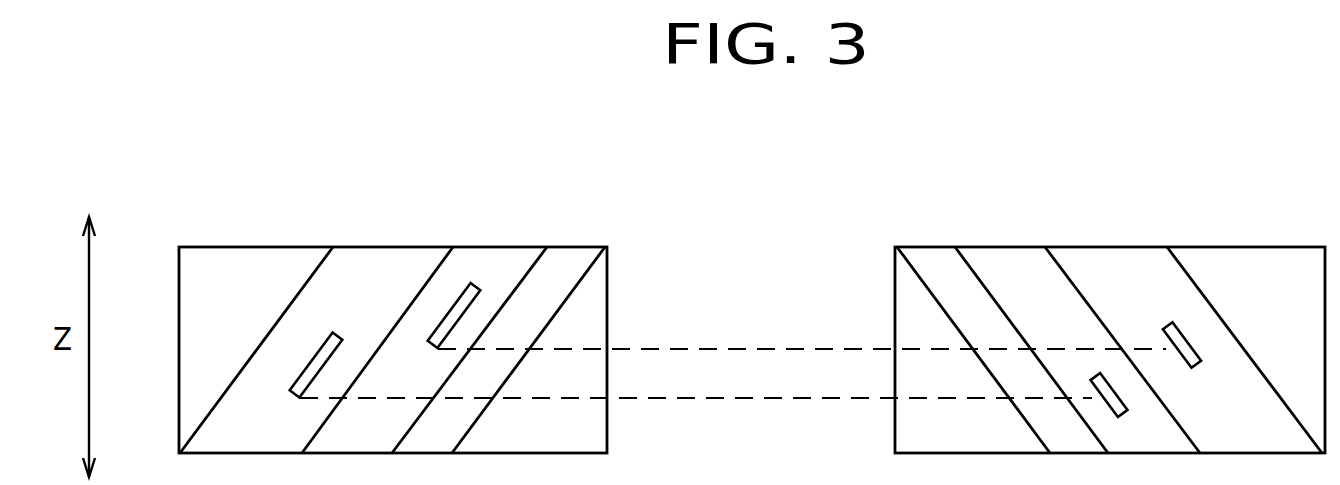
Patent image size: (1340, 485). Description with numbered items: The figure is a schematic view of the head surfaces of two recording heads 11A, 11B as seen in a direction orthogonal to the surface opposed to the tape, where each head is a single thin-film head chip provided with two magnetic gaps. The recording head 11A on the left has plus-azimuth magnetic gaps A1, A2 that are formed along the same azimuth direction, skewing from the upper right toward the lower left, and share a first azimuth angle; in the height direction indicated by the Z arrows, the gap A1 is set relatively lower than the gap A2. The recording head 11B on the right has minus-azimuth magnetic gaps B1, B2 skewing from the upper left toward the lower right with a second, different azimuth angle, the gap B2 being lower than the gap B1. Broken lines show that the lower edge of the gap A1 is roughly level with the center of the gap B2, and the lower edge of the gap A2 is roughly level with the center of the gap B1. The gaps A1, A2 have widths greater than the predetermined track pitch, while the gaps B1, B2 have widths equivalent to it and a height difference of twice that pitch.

The recording head 11A is at (235, 245).
The recording head 11B is at (1274, 245).
The magnetic gap A1 is at (301, 384).
The magnetic gap A2 is at (438, 333).
The magnetic gap B1 is at (1198, 362).
The magnetic gap B2 is at (1124, 411).